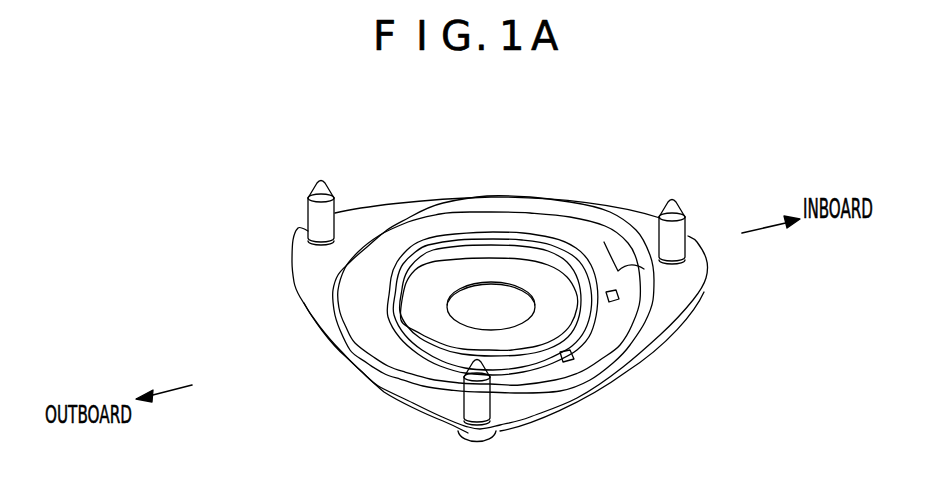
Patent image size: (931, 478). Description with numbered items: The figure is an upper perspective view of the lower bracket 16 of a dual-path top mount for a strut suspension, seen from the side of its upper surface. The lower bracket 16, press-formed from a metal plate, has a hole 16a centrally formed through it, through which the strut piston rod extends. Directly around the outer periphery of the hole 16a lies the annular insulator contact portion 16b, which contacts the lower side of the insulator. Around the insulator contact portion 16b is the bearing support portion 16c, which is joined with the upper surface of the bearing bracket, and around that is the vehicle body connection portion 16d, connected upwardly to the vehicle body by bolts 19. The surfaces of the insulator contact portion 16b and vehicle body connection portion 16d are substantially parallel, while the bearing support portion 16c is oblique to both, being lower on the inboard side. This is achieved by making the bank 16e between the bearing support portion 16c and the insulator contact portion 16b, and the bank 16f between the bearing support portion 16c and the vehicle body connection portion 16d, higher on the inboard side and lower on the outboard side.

The lower bracket 16 is at (284, 339).
The hole 16a is at (494, 296).
The insulator contact portion 16b is at (535, 277).
The bearing support portion 16c is at (382, 357).
The vehicle body connection portion 16d is at (434, 405).
The bank (slant surface) 16e is at (574, 330).
The bank (slant surface) 16f is at (598, 255).
The bolts 19 is at (315, 191).